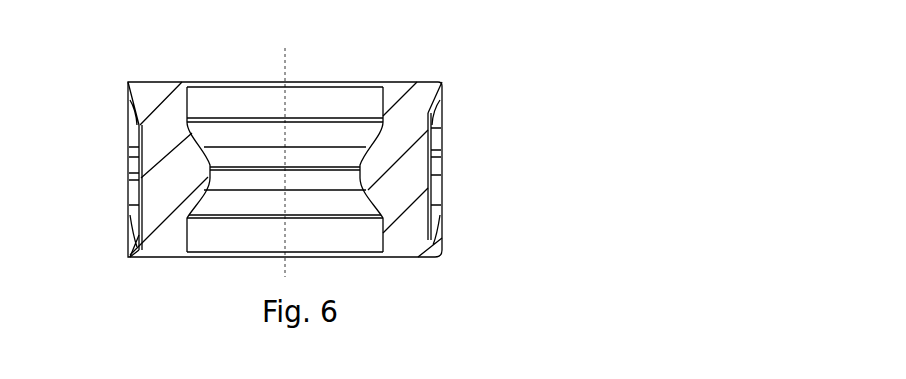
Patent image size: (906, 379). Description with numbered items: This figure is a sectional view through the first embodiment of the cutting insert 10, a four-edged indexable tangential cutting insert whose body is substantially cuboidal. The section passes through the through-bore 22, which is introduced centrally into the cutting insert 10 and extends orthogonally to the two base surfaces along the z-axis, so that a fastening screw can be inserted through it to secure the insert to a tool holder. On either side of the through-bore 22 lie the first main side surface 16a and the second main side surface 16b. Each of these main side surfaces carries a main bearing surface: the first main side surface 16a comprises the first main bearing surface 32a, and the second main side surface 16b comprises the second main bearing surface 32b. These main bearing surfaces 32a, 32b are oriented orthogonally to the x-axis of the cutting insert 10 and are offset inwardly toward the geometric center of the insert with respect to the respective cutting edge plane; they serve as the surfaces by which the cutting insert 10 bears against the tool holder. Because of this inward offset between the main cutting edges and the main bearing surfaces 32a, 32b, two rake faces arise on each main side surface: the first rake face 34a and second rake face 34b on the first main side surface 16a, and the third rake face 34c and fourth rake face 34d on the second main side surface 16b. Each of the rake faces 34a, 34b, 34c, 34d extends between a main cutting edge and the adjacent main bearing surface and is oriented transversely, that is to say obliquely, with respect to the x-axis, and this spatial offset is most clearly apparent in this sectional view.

The cutting insert 10 is at (468, 79).
The through-bore 22 is at (312, 95).
The first main side surface 16a is at (438, 175).
The second main side surface 16b is at (131, 169).
The first main bearing surface 32a is at (442, 148).
The second main bearing surface 32b is at (130, 149).
The first rake face 34a is at (440, 115).
The second rake face 34b is at (440, 228).
The third rake face 34c is at (128, 113).
The fourth rake face 34d is at (131, 226).